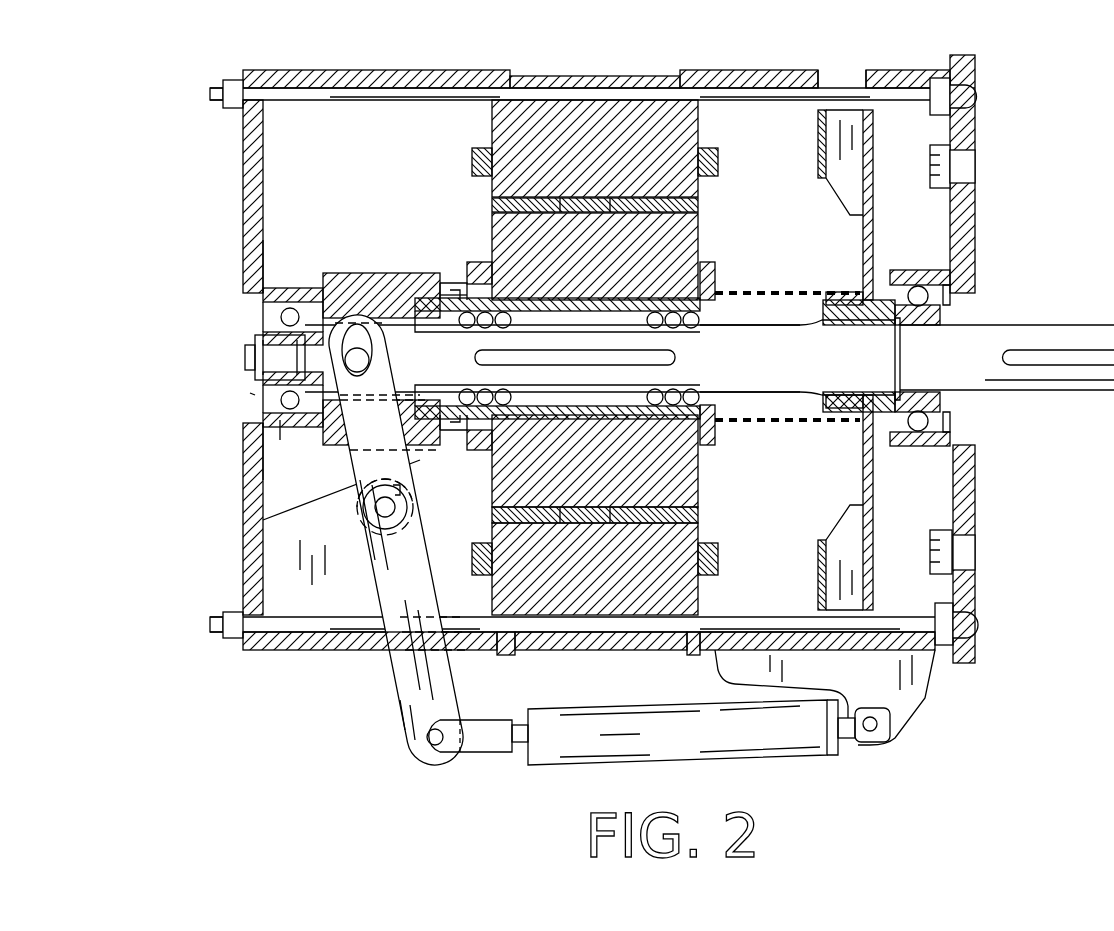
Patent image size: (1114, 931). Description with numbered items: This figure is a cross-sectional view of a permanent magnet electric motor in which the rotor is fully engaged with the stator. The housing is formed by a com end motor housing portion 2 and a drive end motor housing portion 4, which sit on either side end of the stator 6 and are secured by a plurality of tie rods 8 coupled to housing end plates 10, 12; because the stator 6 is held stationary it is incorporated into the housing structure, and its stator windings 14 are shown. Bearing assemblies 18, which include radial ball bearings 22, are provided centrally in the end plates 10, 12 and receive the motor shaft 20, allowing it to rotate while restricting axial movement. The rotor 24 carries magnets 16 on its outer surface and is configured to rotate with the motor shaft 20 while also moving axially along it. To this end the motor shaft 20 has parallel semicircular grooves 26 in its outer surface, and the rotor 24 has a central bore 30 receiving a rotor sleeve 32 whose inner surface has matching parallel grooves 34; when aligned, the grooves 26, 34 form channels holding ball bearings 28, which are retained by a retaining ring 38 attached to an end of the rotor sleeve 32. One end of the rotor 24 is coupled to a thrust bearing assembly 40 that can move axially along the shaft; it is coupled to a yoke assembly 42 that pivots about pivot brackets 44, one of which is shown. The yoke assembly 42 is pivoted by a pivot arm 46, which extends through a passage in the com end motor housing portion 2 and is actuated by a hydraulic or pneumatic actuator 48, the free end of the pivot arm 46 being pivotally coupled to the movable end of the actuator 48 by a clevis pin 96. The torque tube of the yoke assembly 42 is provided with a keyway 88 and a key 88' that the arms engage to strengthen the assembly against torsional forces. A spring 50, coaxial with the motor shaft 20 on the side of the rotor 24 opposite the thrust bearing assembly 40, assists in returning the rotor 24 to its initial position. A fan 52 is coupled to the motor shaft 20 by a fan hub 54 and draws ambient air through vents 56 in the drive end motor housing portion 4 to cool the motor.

The com end motor housing portion 2 is at (402, 70).
The drive end motor housing portion 4 is at (762, 70).
The stator 6 is at (588, 163).
The tie rods 8 is at (218, 84).
The housing end plate 10 is at (255, 206).
The housing end plate 12 is at (978, 213).
The stator windings 14 is at (470, 160).
The magnets 16 is at (490, 207).
The bearing assemblies 18 is at (958, 320).
The motor shaft 20 is at (995, 378).
The radial ball bearings 22 is at (290, 306).
The rotor 24 is at (570, 251).
The parallel grooves 26 is at (762, 300).
The ball bearings 28 is at (508, 298).
The central bore 30 is at (702, 298).
The rotor sleeve 32 is at (572, 329).
The parallel grooves 34 is at (480, 388).
The retaining ring 38 is at (440, 295).
The thrust bearing assembly 40 is at (347, 296).
The yoke assembly 42 is at (398, 455).
The pivot brackets 44 is at (292, 541).
The pivot arm 46 is at (395, 676).
The hydraulic or pneumatic actuator 48 is at (665, 746).
The spring 50 is at (830, 292).
The fan 52 is at (835, 162).
The fan hub 54 is at (857, 412).
The vents 56 is at (843, 71).
The keyway 88 is at (350, 501).
The key 88' is at (416, 507).
The clevis pin 96 is at (432, 746).